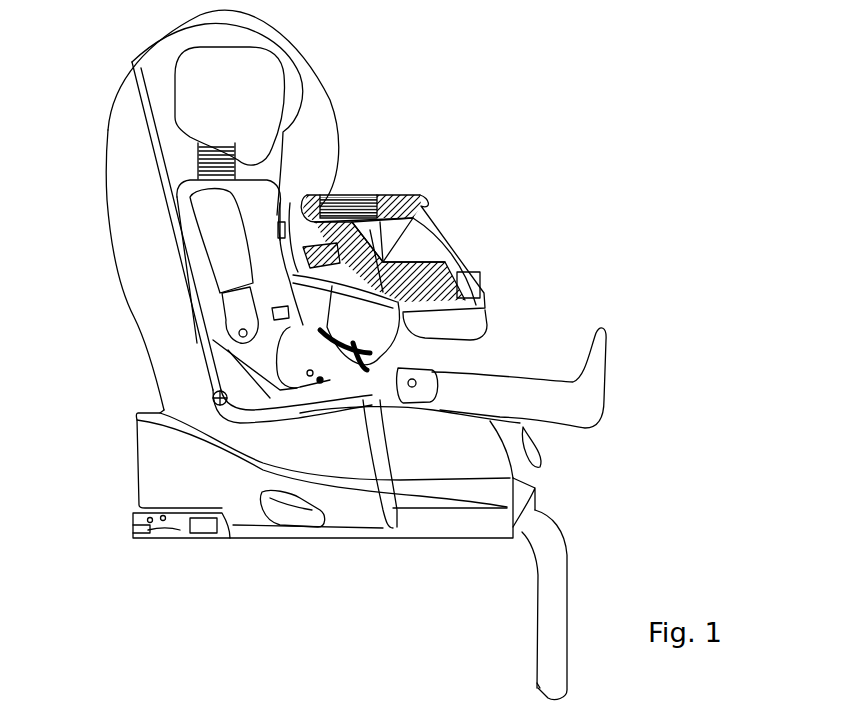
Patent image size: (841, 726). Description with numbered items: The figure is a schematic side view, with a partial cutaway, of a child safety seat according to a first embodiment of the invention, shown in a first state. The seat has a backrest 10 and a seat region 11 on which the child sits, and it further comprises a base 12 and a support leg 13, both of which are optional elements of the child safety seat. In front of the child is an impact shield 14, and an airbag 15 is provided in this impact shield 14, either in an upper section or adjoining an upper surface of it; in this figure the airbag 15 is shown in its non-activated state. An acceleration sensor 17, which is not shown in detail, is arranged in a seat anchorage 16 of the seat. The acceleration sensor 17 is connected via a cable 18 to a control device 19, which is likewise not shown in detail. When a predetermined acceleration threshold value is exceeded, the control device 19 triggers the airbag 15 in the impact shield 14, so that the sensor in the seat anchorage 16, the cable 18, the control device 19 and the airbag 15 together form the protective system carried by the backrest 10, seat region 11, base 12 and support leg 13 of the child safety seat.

The backrest 10 is at (160, 348).
The seat region 11 is at (343, 418).
The base 12 is at (467, 533).
The support leg 13 is at (555, 610).
The impact shield 14 is at (415, 205).
The airbag 15 is at (368, 192).
The seat anchorage 16 is at (180, 532).
The acceleration sensor 17 is at (188, 560).
The cable 18 is at (393, 462).
The control device 19 is at (420, 232).